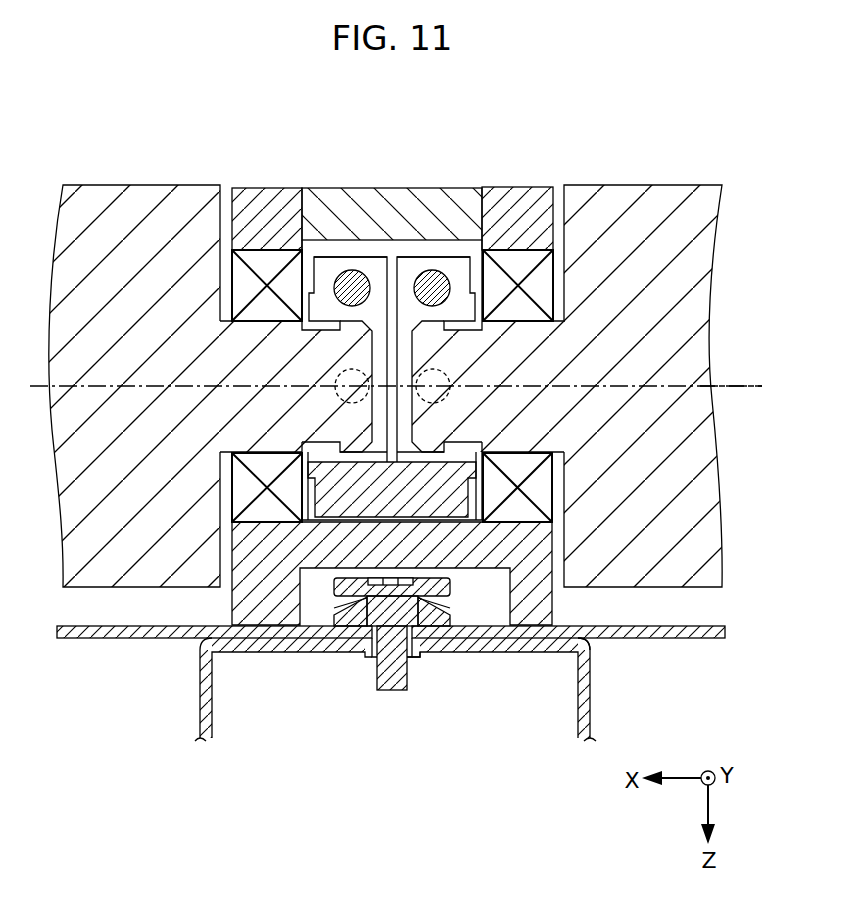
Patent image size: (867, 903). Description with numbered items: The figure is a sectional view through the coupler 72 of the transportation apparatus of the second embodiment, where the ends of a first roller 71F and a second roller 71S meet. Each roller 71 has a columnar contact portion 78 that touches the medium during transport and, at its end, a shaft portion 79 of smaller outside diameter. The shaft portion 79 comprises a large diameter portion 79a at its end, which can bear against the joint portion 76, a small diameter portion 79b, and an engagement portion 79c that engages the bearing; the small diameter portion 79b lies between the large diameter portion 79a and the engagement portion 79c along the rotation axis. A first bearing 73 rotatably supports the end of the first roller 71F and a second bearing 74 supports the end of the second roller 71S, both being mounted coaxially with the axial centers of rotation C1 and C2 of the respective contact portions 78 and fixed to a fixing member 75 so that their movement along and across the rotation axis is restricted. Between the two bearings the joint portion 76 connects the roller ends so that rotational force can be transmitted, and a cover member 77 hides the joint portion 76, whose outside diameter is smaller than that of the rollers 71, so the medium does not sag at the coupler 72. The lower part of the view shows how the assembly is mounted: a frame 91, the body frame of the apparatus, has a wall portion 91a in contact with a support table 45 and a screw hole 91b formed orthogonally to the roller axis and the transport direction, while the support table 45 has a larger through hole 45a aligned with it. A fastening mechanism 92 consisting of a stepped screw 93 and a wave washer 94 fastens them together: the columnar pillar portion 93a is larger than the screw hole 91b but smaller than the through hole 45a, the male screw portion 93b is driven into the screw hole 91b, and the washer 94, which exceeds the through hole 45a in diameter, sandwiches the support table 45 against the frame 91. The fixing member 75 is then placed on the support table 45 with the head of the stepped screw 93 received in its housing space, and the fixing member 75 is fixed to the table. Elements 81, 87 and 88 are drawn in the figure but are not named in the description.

The roller 71 is at (385, 346).
The first roller 71F is at (118, 180).
The second roller 71S is at (612, 180).
The coupler 72 is at (283, 180).
The first bearing 73 is at (231, 505).
The second bearing 74 is at (554, 498).
The fixing member 75 is at (548, 603).
The joint portion 76 is at (468, 249).
The cover member 77 is at (360, 188).
The contact portion 78 is at (200, 184).
The shaft portion 79 is at (427, 352).
The large diameter portion 79a is at (425, 454).
The small diameter portion 79b is at (452, 444).
The engagement portion 79c is at (497, 456).
The elastic member 81 is at (347, 512).
The second magnet 87 is at (345, 372).
The first magnet 88 is at (428, 268).
The frame 91 is at (417, 689).
The wall portion 91a is at (578, 650).
The screw hole 91b is at (407, 660).
The fastening mechanism 92 is at (395, 675).
The stepped screw 93 is at (450, 586).
The pillar portion 93a is at (363, 638).
The male screw portion 93b is at (376, 689).
The washer 94 is at (331, 613).
The support table 45 is at (391, 645).
The through hole 45a is at (438, 640).
The axial center of rotation of the first roller C1 is at (61, 390).
The axial center of rotation of the second roller C2 is at (716, 390).